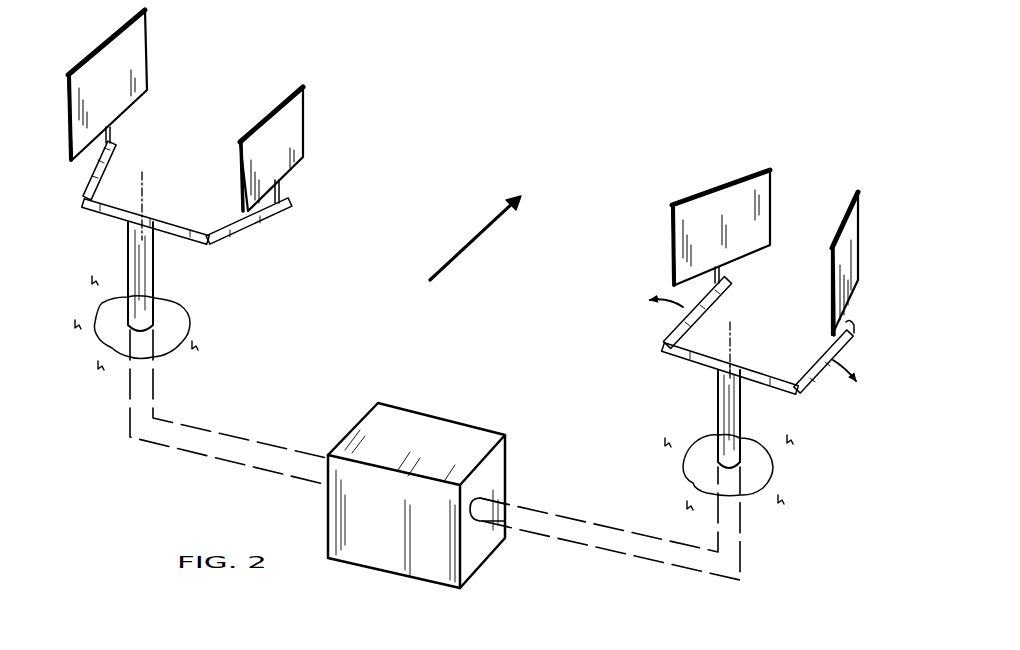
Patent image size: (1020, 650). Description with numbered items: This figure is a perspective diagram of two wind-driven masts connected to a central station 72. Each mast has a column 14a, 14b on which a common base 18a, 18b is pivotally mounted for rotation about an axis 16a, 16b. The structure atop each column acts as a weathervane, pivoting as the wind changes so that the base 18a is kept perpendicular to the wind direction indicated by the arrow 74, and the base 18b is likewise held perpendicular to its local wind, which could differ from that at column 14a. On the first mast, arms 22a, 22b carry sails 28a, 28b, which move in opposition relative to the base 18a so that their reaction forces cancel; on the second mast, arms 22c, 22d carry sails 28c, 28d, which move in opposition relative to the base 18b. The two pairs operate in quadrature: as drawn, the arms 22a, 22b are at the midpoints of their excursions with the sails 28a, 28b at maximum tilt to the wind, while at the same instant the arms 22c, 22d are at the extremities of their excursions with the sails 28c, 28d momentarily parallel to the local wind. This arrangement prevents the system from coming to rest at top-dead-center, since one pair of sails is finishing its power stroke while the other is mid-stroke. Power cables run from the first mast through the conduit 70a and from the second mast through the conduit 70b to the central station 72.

The column 14a is at (718, 417).
The column 14b is at (155, 273).
The axis 16a is at (730, 343).
The axis 16b is at (142, 183).
The common base 18a is at (692, 362).
The common base 18b is at (102, 213).
The arm 22a is at (715, 303).
The arm 22b is at (850, 334).
The arm 22c is at (115, 155).
The arm 22d is at (253, 225).
The sail 28a is at (748, 172).
The sail 28b is at (850, 233).
The sail 28c is at (117, 28).
The sail 28d is at (312, 94).
The conduit 70a is at (595, 522).
The conduit 70b is at (228, 432).
The central station 72 is at (412, 410).
The arrow 74 is at (468, 245).